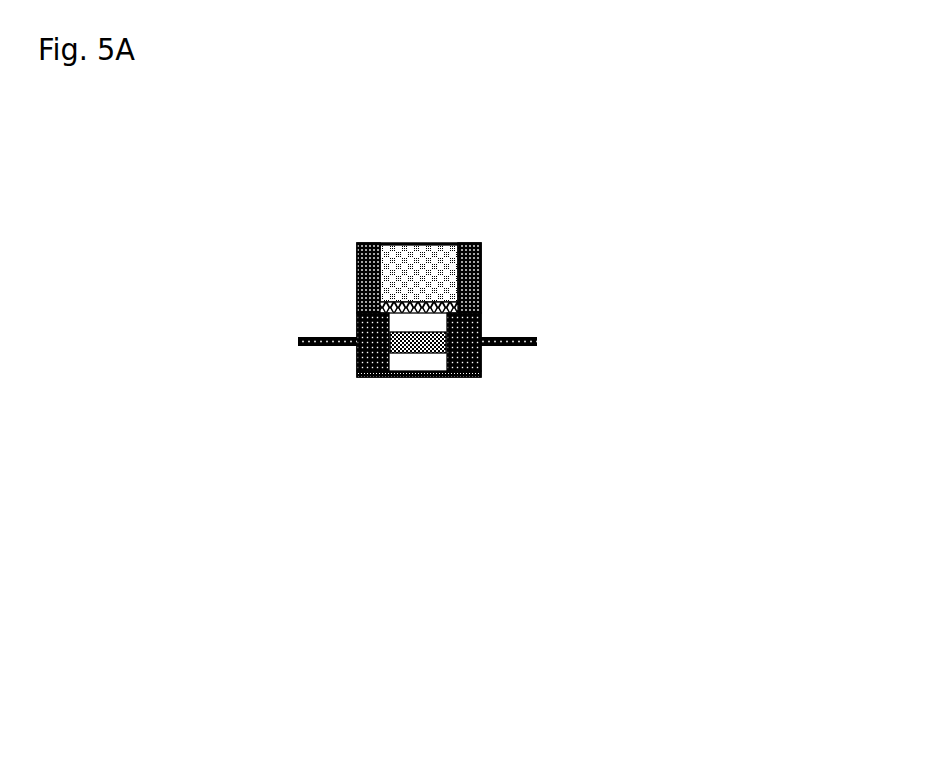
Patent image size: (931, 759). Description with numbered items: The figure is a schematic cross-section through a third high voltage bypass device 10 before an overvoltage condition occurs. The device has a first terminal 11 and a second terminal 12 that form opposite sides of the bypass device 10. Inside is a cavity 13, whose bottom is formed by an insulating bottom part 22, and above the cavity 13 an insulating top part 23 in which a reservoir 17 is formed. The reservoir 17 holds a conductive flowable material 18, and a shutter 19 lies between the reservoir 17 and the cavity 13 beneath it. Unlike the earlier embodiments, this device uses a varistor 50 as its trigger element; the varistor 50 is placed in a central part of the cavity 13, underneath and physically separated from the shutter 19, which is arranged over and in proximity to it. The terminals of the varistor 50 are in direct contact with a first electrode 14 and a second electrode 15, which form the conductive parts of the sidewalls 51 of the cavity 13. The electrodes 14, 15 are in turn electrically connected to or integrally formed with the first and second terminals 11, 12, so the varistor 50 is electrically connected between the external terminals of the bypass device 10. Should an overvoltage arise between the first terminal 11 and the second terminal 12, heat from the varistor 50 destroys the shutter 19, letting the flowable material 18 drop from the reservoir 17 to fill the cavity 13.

The high voltage bypass device 10 is at (697, 92).
The first terminal 11 is at (320, 347).
The second terminal 12 is at (535, 342).
The cavity 13 is at (418, 362).
The first electrode 14 is at (357, 323).
The second electrode 15 is at (482, 320).
The reservoir 17 is at (418, 242).
The flowable material 18 is at (420, 275).
The shutter 19 is at (428, 307).
The insulating bottom part 22 is at (357, 375).
The insulating top part 23 is at (358, 288).
The varistor 50 is at (455, 368).
The sidewalls 51 is at (419, 342).